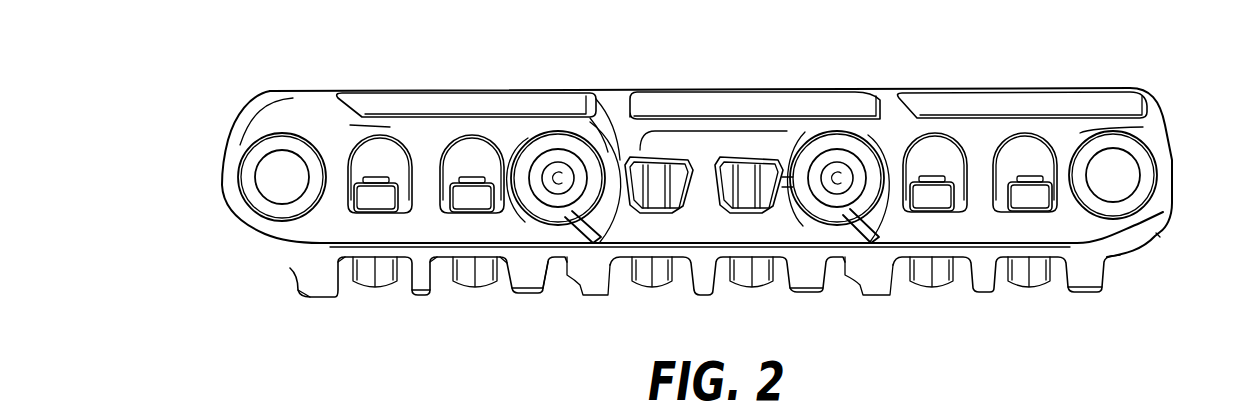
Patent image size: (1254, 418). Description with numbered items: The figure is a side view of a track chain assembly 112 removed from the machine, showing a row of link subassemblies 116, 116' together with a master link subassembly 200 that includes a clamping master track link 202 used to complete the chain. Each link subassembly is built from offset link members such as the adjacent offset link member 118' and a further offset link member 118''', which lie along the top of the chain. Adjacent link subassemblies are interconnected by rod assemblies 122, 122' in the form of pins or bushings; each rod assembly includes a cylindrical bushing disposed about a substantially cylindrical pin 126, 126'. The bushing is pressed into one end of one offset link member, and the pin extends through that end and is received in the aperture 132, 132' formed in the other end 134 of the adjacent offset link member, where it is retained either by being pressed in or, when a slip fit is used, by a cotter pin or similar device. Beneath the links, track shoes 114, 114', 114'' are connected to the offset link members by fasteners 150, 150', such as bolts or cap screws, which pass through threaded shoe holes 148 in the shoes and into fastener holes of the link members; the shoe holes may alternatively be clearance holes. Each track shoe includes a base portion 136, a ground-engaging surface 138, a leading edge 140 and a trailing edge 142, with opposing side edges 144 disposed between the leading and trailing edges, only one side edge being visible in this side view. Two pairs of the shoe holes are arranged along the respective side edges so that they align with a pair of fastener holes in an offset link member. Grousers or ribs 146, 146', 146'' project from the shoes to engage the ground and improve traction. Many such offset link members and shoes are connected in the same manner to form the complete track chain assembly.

The chain assembly 112 is at (1075, 68).
The track shoe 114 is at (546, 328).
The track shoe 114' is at (1096, 320).
The track shoe 114'' is at (818, 320).
The link subassembly 116 is at (466, 69).
The link subassembly 116' is at (1022, 71).
The adjacent offset link member 118' is at (448, 69).
The offset link member 118''' is at (1031, 69).
The rod assembly 122 is at (560, 136).
The rod assembly 122' is at (847, 133).
The pin 126 is at (552, 134).
The pin 126' is at (837, 135).
The aperture 132 is at (604, 269).
The aperture 132' is at (880, 271).
The other end 134 is at (600, 163).
The base portion 136 is at (432, 283).
The ground-engaging surface 138 is at (342, 262).
The leading edge 140 is at (610, 235).
The trailing edge 142 is at (290, 268).
The side edge 144 is at (507, 270).
The rib 146 is at (439, 331).
The rib 146' is at (574, 301).
The rib 146'' is at (286, 323).
The threaded shoe hole 148 is at (472, 262).
The fastener 150 is at (563, 311).
The fastener 150' is at (980, 305).
The master link subassembly 200 is at (755, 121).
The clamping master track link 202 is at (733, 103).